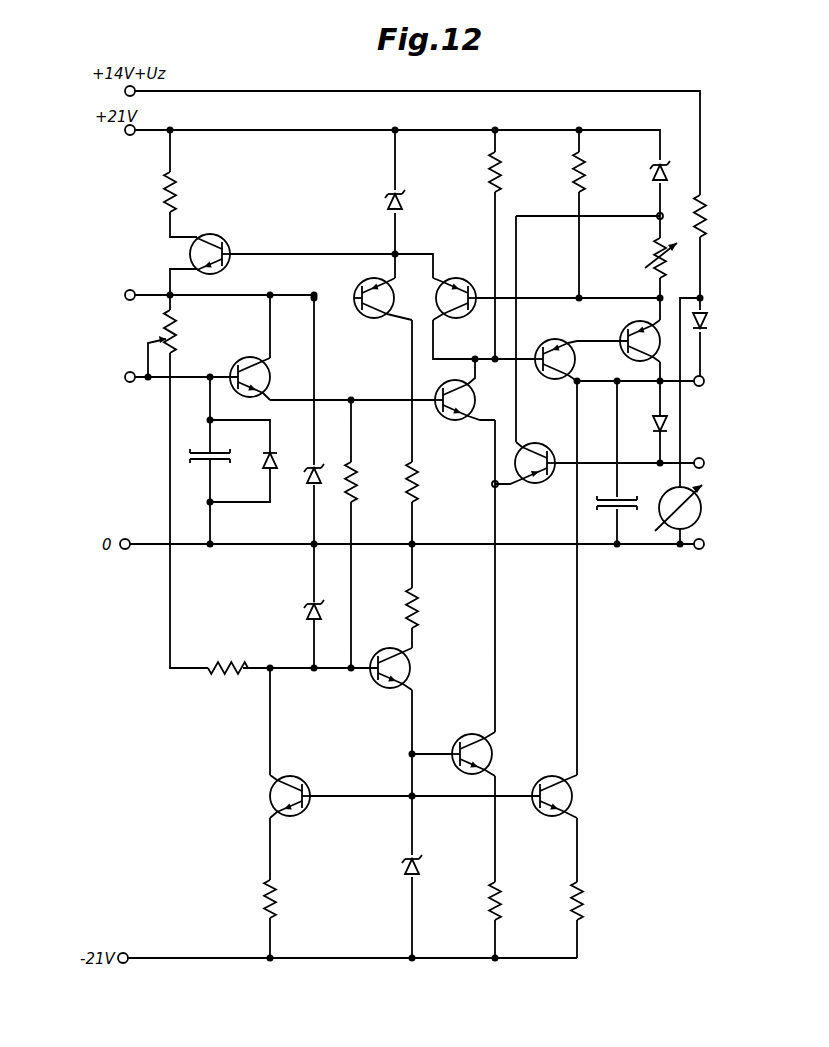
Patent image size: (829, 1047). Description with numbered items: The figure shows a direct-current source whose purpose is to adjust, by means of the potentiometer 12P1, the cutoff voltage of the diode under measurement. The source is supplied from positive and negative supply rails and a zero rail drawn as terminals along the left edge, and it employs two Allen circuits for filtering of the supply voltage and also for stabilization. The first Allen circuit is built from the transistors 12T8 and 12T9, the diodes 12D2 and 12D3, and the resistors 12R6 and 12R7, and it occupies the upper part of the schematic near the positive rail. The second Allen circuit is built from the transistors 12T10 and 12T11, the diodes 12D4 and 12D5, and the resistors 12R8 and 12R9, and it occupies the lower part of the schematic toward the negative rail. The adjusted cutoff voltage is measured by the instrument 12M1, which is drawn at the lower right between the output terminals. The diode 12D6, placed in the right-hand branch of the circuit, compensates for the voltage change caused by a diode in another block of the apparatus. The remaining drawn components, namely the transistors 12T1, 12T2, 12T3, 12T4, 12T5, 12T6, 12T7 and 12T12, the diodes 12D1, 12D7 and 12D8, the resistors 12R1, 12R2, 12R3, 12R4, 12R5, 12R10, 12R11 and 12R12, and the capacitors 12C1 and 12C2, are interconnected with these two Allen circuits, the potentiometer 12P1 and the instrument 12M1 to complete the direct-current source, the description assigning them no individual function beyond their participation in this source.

The resistor 12R7 is at (176, 203).
The transistor 12T9 is at (190, 254).
The potentiometer 12P1 is at (178, 337).
The transistor 12T12 is at (241, 370).
The capacitor 12C2 is at (207, 450).
The diode 12D8 is at (262, 464).
The diode 12D3 is at (305, 487).
The resistor 12R10 is at (358, 470).
The transistor 12T8 is at (366, 285).
The diode 12D2 is at (414, 210).
The transistor 12T3 is at (456, 288).
The resistor 12R3 is at (490, 185).
The resistor 12R2 is at (573, 184).
The zener diode 12D1 is at (653, 181).
The resistor 12R12 is at (703, 209).
The variable resistor 12R1 is at (654, 265).
The diode 12D6 is at (706, 323).
The transistor 12T1 is at (623, 332).
The transistor 12T2 is at (566, 367).
The transistor 12T4 is at (450, 413).
The resistor 12R6 is at (419, 501).
The transistor 12T5 is at (547, 484).
The diode 12D7 is at (657, 419).
The capacitor 12C1 is at (608, 489).
The instrument 12M1 is at (692, 519).
The diode 12D4 is at (308, 612).
The resistor 12R8 is at (418, 623).
The transistor 12T10 is at (416, 668).
The resistor 12R11 is at (248, 661).
The transistor 12T11 is at (268, 792).
The transistor 12T6 is at (493, 769).
The transistor 12T7 is at (568, 809).
The diode 12D5 is at (402, 870).
The resistor 12R4 is at (506, 879).
The resistor 12R5 is at (580, 888).
The resistor 12R9 is at (273, 916).